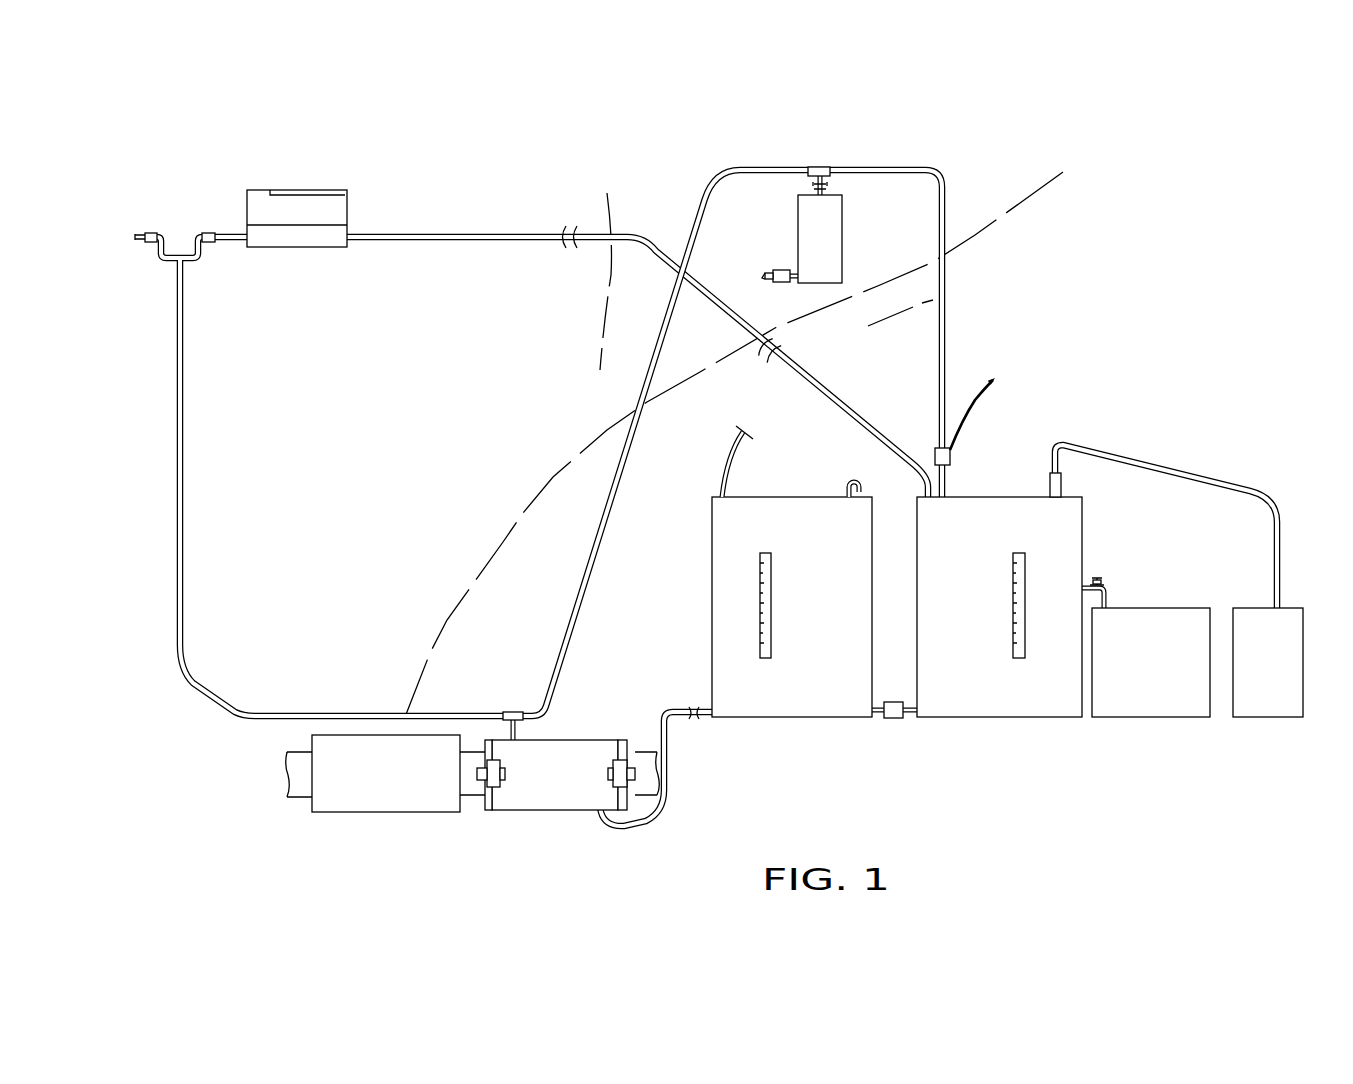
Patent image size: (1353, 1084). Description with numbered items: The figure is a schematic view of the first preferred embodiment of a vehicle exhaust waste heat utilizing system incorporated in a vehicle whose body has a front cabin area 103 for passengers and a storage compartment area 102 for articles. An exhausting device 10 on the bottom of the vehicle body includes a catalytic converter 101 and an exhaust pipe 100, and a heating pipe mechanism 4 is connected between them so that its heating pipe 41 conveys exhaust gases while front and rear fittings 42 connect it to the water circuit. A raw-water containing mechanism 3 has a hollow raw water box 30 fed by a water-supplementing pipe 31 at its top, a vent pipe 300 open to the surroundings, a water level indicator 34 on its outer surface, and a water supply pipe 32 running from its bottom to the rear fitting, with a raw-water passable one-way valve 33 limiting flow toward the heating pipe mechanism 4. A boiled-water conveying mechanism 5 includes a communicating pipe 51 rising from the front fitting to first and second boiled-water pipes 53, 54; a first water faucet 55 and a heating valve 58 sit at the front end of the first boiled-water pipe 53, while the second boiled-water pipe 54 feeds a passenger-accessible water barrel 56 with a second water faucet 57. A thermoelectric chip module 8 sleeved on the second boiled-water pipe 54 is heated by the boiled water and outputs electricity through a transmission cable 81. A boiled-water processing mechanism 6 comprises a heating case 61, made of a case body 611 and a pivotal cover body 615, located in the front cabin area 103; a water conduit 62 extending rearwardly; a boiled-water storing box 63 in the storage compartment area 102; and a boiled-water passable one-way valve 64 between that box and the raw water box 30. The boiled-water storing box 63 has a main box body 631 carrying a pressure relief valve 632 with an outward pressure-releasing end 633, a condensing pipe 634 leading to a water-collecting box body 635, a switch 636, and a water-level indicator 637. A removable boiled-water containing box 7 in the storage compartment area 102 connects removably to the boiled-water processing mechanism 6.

The raw-water containing mechanism 3 is at (770, 613).
The raw water box 30 is at (851, 703).
The water-supplementing pipe 31 is at (732, 456).
The vent pipe 300 is at (843, 487).
The water supply pipe 32 is at (662, 805).
The raw-water passable one-way valve 33 is at (603, 818).
The water level indicator 34 is at (762, 568).
The heating pipe mechanism 4 is at (578, 798).
The heating pipe 41 is at (515, 812).
The front and rear fittings 42 is at (596, 788).
The boiled-water conveying mechanism 5 is at (170, 505).
The communicating pipe 51 is at (523, 733).
The first boiled-water pipe 53 is at (190, 682).
The second boiled-water pipe 54 is at (716, 171).
The first water faucet 55 is at (152, 233).
The passenger-accessible water barrel 56 is at (828, 238).
The second water faucet 57 is at (778, 268).
The heating valve 58 is at (206, 233).
The boiled-water processing mechanism 6 is at (1130, 452).
The heating case 61 is at (331, 178).
The case body 611 is at (326, 218).
The cover body 615 is at (328, 188).
The water conduit 62 is at (500, 233).
The boiled-water storing box 63 is at (1024, 589).
The main box body 631 is at (992, 703).
The pressure relief valve 632 is at (1063, 482).
The pressure-releasing end 633 is at (1053, 469).
The condensing pipe 634 is at (1243, 488).
The water-collecting box body 635 is at (1287, 613).
The switch 636 is at (1105, 580).
The water-level indicator 637 is at (1022, 604).
The boiled-water passable one-way valve 64 is at (895, 718).
The removable boiled-water containing box 7 is at (1160, 678).
The thermoelectric chip module 8 is at (934, 453).
The transmission cable 81 is at (976, 381).
The exhausting device 10 is at (379, 810).
The exhaust pipe 100 is at (640, 790).
The catalytic converter 101 is at (402, 783).
The storage compartment area 102 is at (940, 300).
The front cabin area 103 is at (607, 196).